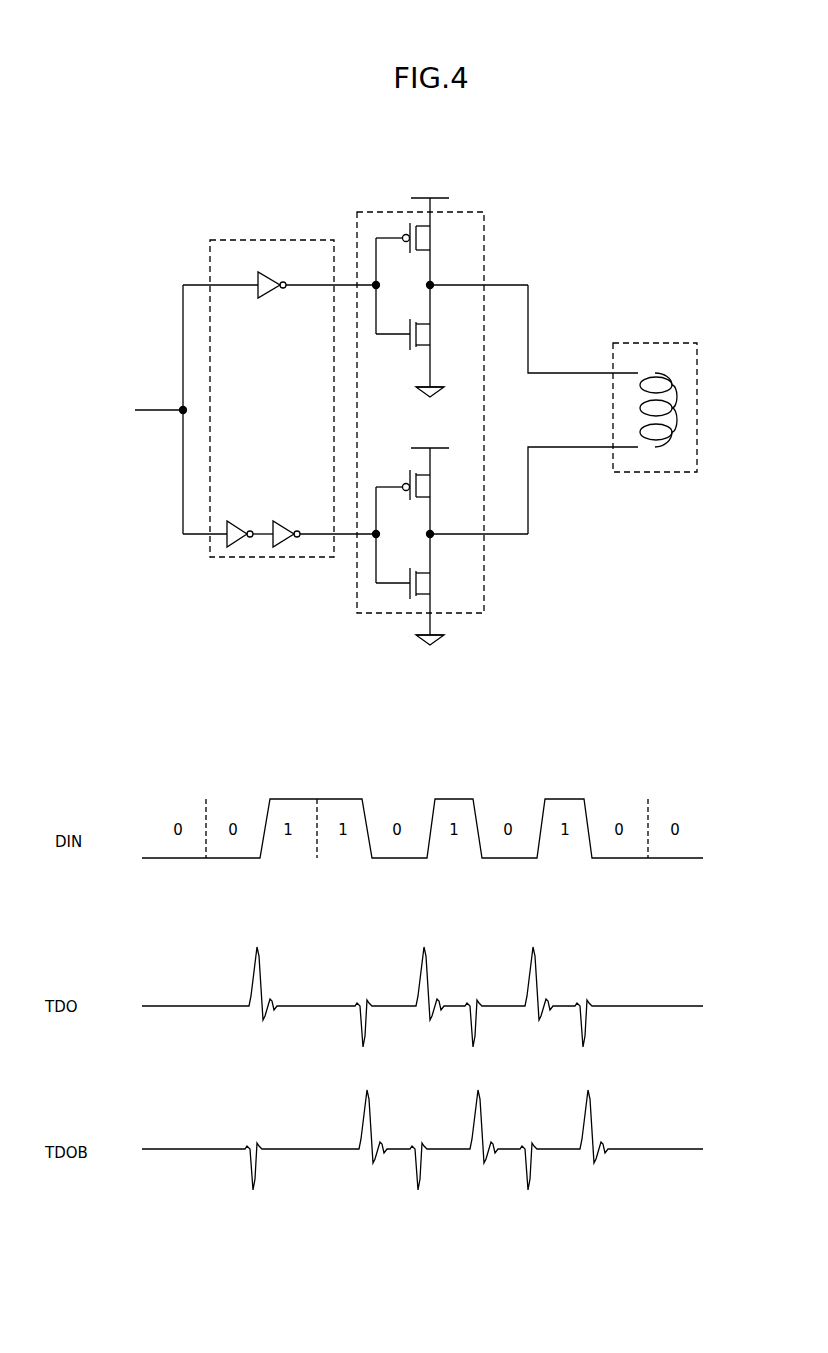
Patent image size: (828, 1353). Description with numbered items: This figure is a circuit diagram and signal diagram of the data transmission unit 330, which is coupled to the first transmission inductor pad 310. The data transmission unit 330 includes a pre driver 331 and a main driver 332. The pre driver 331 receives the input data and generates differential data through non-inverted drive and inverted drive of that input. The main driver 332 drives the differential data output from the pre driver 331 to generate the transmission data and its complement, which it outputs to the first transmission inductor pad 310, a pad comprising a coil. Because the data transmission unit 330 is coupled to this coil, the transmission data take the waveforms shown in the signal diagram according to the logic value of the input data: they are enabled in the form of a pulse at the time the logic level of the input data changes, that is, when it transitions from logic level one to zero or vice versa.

The data transmission unit 330 is at (196, 169).
The pre driver 331 is at (258, 240).
The main driver 332 is at (484, 236).
The first transmission inductor pad 310 is at (663, 343).